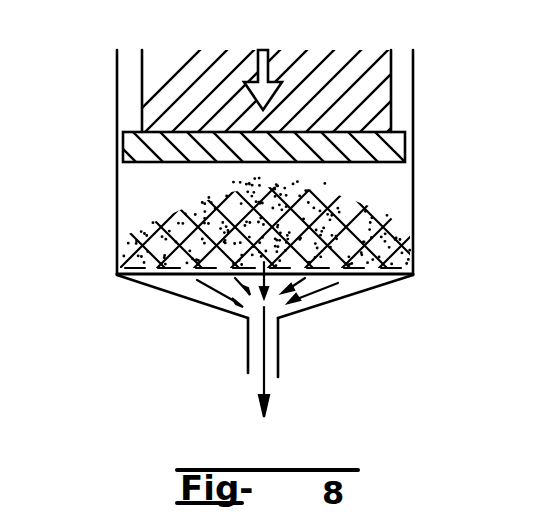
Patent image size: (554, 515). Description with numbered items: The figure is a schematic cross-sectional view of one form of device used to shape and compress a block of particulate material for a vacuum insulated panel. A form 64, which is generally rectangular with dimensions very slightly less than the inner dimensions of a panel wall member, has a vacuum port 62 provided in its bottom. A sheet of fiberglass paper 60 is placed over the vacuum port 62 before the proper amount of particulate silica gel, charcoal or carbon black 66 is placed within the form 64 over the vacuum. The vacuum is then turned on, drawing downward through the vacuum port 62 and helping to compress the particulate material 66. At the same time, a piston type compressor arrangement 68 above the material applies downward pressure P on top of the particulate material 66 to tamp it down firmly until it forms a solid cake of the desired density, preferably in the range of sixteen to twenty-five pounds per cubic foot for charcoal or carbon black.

The sheet of fiberglass paper 60 is at (162, 263).
The vacuum port 62 is at (278, 332).
The form 64 is at (118, 203).
The particulate material 66 is at (383, 231).
The piston type compressor arrangement 68 is at (124, 146).